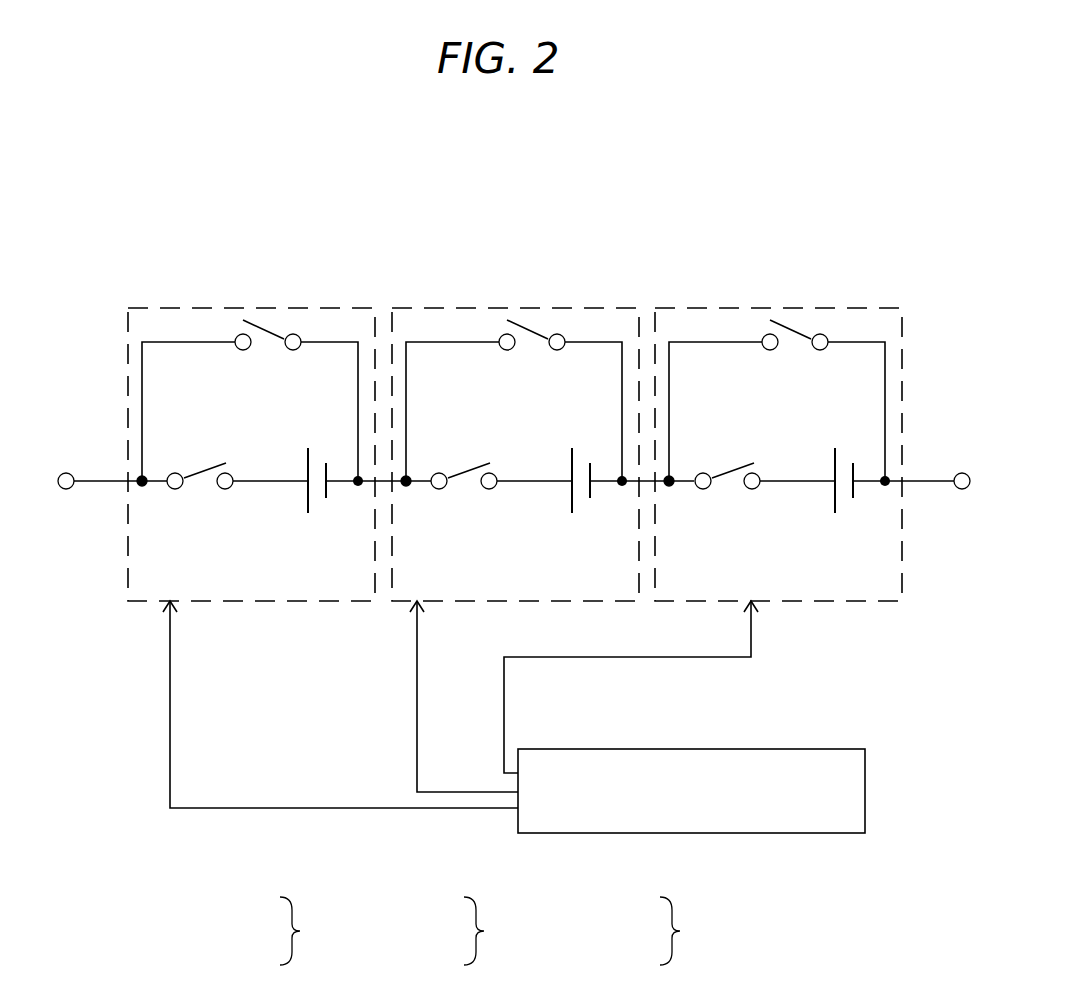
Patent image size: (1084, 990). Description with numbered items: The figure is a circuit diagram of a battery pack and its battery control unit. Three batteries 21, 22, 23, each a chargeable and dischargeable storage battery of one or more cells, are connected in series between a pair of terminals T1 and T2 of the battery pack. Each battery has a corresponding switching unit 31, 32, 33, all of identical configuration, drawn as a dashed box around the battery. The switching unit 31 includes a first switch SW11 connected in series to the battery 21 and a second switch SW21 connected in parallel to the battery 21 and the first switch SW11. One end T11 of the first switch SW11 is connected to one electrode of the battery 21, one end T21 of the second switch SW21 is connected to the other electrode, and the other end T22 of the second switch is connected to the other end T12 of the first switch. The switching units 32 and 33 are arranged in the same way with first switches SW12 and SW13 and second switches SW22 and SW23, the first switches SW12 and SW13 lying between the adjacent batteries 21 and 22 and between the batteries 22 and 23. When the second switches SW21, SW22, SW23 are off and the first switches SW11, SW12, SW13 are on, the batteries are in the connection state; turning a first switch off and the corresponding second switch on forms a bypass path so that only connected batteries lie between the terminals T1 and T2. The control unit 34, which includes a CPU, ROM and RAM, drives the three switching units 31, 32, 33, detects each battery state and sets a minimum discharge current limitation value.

The terminal T1 is at (65, 467).
The terminal T2 is at (962, 467).
The one end of the first switch T11 is at (247, 485).
The other end of the first switch T12 is at (143, 487).
The one end of the second switch T21 is at (308, 340).
The other end of the second switch T22 is at (208, 340).
The first switch SW11 is at (198, 467).
The first switch SW12 is at (463, 467).
The first switch SW13 is at (728, 467).
The second switch SW21 is at (265, 328).
The second switch SW22 is at (531, 328).
The second switch SW23 is at (805, 328).
The battery 21 is at (307, 462).
The battery 22 is at (572, 462).
The battery 23 is at (835, 462).
The switching unit 31 is at (300, 931).
The switching unit 32 is at (484, 931).
The switching unit 33 is at (680, 931).
The control unit 34 is at (865, 787).